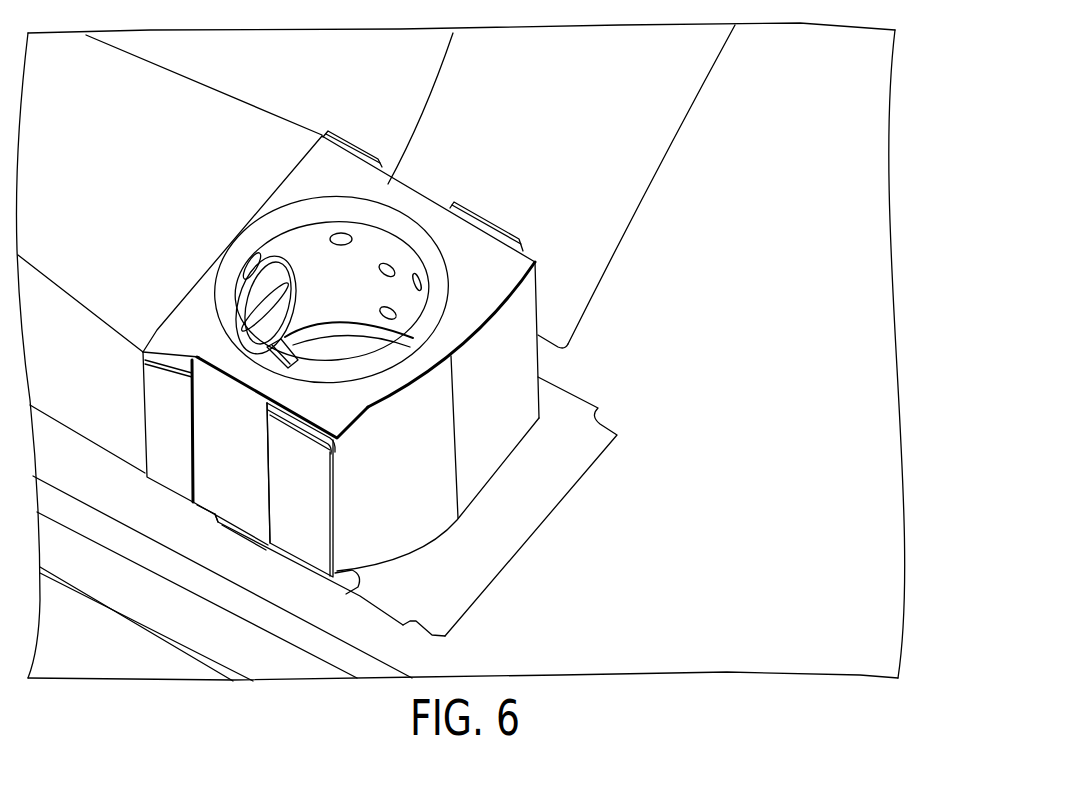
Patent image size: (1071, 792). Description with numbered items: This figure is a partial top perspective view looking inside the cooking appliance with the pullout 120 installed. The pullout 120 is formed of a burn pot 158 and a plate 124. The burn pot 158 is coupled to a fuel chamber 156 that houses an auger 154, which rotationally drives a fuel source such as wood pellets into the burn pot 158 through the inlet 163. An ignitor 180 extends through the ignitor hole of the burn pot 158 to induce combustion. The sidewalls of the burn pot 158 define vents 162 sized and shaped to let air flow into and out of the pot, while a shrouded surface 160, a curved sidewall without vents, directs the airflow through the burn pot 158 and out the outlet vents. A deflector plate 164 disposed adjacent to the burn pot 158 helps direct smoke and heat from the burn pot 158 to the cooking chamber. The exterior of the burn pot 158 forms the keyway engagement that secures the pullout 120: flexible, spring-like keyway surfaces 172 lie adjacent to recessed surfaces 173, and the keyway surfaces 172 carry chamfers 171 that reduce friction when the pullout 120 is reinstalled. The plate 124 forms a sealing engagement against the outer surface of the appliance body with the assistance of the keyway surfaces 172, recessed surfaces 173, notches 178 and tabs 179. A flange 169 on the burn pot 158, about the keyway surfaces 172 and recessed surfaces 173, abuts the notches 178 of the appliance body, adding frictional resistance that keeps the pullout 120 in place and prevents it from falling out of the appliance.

The pullout 120 is at (536, 120).
The plate 124 is at (587, 457).
The auger 154 is at (258, 290).
The fuel chamber 156 is at (50, 171).
The burn pot 158 is at (397, 200).
The shrouded surface 160 is at (440, 493).
The vents 162 is at (338, 233).
The inlet 163 is at (288, 268).
The deflector plate 164 is at (662, 152).
The flange 169 is at (353, 586).
The chamfers 171 is at (462, 206).
The keyway surfaces 172 is at (337, 137).
The recessed surfaces 173 is at (221, 461).
The notches 178 is at (587, 395).
The tabs 179 is at (207, 510).
The ignitor 180 is at (295, 358).